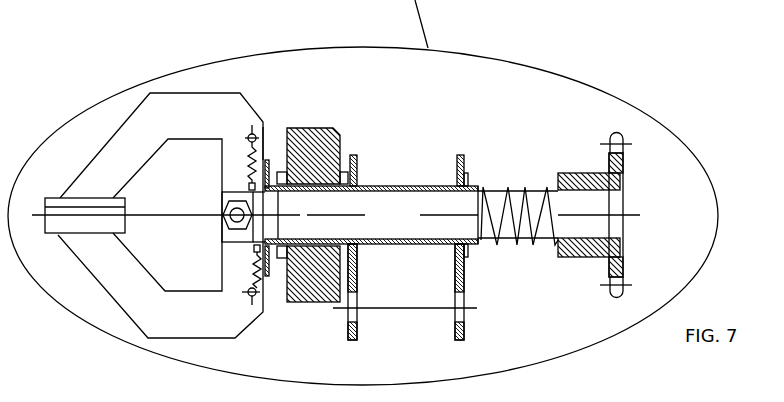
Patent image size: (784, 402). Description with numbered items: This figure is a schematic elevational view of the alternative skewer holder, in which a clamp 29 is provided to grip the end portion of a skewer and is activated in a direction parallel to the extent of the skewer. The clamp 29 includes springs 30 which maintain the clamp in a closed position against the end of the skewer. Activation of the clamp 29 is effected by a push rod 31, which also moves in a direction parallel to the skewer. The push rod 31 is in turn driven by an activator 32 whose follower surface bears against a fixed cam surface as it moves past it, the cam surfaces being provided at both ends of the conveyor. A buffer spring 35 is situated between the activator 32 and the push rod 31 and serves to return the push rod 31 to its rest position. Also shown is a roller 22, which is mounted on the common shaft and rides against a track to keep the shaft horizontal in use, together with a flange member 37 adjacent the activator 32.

The clamp 29 is at (128, 133).
The springs 30 is at (256, 155).
The push rod 31 is at (393, 207).
The roller 22 is at (307, 303).
The buffer spring 35 is at (508, 187).
The plunger flange 37 is at (625, 168).
The activator 32 is at (617, 133).